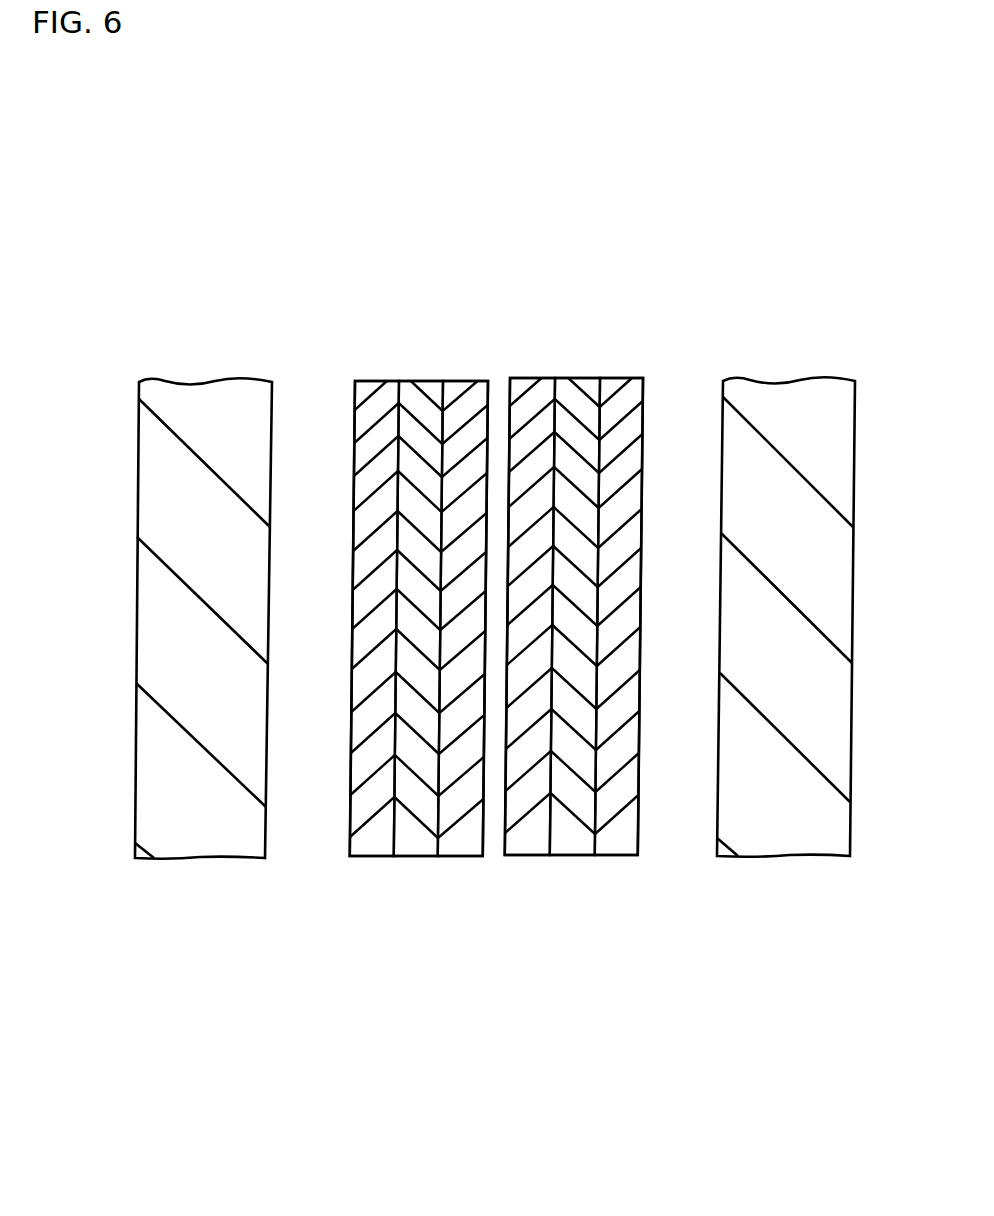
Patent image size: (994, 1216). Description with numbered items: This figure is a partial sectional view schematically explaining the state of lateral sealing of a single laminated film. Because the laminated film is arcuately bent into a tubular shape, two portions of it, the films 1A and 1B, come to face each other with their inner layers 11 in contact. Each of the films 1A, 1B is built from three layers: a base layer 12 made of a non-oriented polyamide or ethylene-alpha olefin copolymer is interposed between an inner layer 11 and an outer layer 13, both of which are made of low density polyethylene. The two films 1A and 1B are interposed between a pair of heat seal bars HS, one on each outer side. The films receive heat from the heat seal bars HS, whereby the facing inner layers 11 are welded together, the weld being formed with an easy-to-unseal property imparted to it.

The heat seal bar HS is at (192, 386).
The inner layer 11 is at (456, 845).
The base layer 12 is at (411, 845).
The outer layer 13 is at (367, 847).
The film 1A is at (485, 950).
The film 1B is at (725, 950).